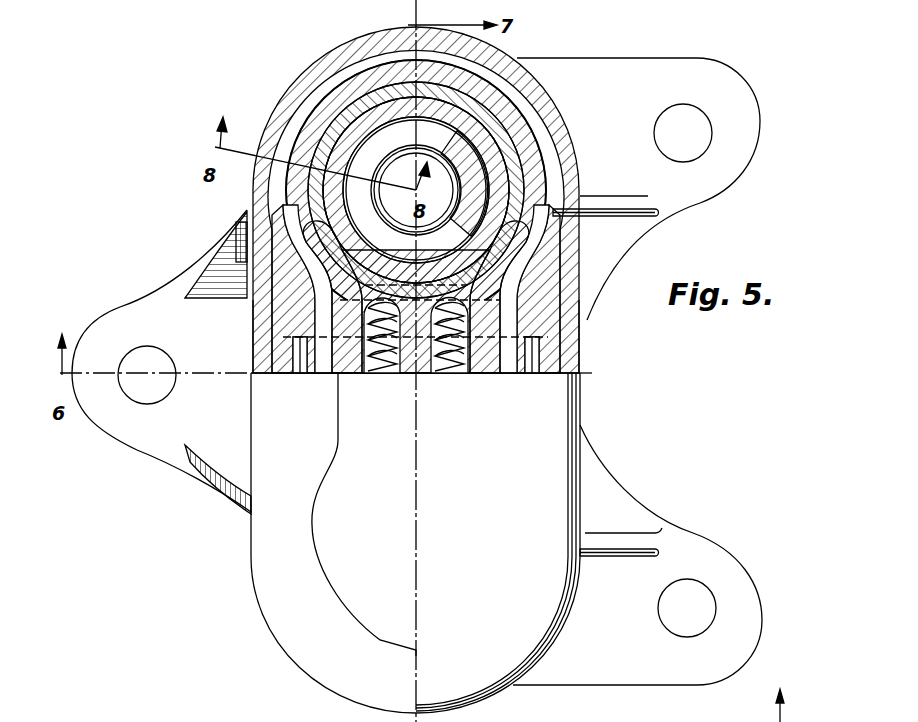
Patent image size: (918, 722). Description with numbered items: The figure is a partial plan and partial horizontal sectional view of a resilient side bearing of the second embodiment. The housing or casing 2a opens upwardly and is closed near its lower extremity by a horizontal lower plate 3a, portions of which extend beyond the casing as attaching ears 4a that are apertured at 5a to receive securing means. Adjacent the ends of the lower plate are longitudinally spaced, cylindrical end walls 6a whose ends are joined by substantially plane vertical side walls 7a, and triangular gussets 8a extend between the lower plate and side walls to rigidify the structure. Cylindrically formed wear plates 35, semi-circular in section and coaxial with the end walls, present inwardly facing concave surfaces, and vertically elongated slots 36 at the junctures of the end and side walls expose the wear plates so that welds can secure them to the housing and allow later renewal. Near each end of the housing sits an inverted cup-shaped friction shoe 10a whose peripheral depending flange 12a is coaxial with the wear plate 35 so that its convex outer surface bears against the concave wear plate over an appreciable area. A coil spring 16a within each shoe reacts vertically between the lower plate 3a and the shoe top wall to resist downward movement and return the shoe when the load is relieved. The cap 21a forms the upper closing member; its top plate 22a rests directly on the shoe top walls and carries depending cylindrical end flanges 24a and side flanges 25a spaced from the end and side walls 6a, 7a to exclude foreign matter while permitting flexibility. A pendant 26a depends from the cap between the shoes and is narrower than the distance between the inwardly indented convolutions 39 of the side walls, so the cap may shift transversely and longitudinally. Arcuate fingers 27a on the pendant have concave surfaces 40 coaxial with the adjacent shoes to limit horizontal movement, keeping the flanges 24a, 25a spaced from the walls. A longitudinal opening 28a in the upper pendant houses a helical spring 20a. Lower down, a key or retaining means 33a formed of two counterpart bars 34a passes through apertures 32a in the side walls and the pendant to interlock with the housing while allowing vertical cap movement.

The housing or casing 2a is at (688, 530).
The lower plate 3a is at (720, 74).
The attaching ears 4a is at (760, 148).
The apertures 5a is at (417, 370).
The end walls 6a is at (392, 68).
The side walls 7a is at (576, 244).
The gussets 8a is at (650, 202).
The friction member, block or shoe 10a is at (510, 202).
The peripheral depending continuous flange 12a is at (395, 180).
The helical or coil spring 16a is at (430, 182).
The coil or helical spring 20a is at (437, 376).
The cover or cap 21a is at (415, 543).
The bearing or top plate 22a is at (376, 547).
The end flanges 24a is at (498, 72).
The side flanges 25a is at (607, 352).
The pendant 26a is at (492, 300).
The arcuate extensions or fingers 27a is at (193, 292).
The opening 28a is at (362, 376).
The apertures 32a is at (312, 337).
The key or retaining means 33a is at (533, 376).
The counterpart plates or bars 34a is at (326, 375).
The wear plates 35 is at (516, 88).
The slots 36 is at (302, 130).
The convolutions 39 is at (320, 314).
The concave surface 40 is at (398, 200).